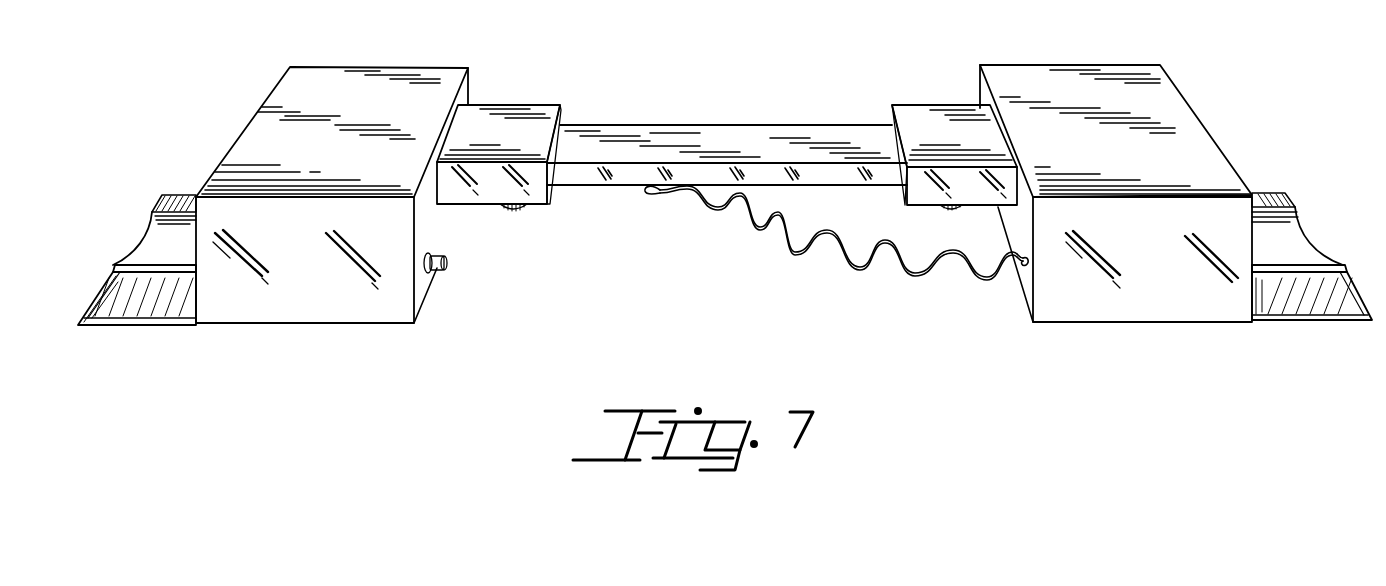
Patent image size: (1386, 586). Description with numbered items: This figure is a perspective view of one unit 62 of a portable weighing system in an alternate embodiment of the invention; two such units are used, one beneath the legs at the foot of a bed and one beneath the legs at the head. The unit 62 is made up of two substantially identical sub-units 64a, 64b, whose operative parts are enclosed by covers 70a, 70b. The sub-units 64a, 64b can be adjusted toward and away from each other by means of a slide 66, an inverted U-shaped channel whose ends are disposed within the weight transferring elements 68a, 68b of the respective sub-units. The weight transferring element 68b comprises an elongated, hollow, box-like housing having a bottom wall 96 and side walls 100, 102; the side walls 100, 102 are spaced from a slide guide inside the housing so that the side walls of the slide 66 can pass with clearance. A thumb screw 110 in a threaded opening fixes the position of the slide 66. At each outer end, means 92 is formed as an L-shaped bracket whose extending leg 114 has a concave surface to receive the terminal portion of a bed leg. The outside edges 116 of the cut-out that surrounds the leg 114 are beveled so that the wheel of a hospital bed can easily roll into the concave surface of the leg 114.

The unit 62 is at (706, 52).
The sub-unit 64a is at (347, 64).
The sub-unit 64b is at (1079, 54).
The slide 66 is at (763, 133).
The weight transferring element 68a is at (530, 110).
The weight transferring element 68b is at (960, 105).
The cover 70a is at (264, 103).
The cover 70b is at (1198, 113).
The means 92 is at (134, 229).
The bottom wall 96 is at (487, 141).
The side wall 100 is at (463, 198).
The side wall 102 is at (985, 192).
The thumb screw 110 is at (517, 210).
The extending leg 114 is at (128, 258).
The outside edges 116 is at (175, 320).